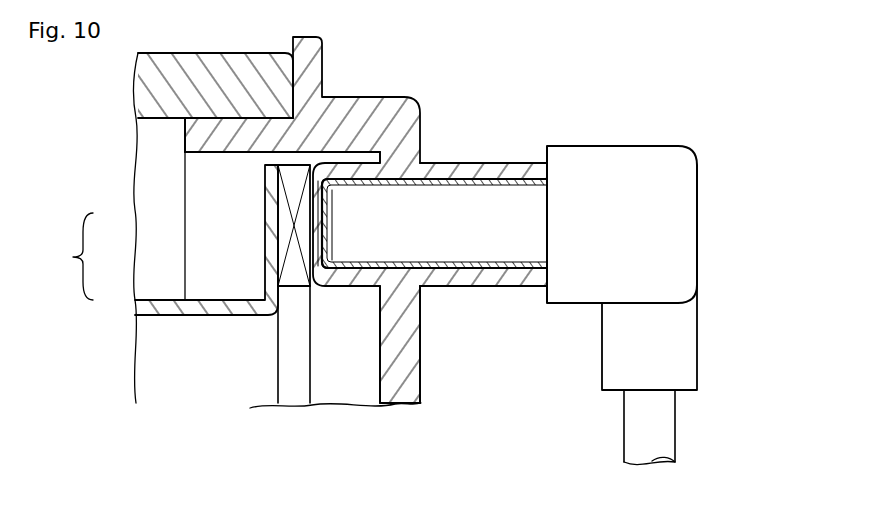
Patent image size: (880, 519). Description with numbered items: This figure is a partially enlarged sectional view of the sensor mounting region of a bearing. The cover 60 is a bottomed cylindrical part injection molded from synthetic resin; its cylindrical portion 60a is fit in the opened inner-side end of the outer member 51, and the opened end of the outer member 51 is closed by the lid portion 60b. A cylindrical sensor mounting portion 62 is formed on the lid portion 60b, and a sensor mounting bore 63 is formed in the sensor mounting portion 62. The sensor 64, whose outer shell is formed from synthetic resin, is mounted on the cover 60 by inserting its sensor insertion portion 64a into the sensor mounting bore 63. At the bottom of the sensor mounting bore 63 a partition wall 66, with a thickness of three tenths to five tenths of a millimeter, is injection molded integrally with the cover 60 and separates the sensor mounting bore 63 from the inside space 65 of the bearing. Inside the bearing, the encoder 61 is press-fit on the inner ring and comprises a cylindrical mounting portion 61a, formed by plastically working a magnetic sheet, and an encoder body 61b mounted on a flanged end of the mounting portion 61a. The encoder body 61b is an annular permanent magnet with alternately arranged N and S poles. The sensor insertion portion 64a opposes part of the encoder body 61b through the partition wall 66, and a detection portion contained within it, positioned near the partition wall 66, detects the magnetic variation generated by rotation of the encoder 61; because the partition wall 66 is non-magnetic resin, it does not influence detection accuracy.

The outer member 51 is at (183, 77).
The cover 60 is at (403, 97).
The cylindrical portion 60a is at (233, 125).
The lid portion 60b is at (421, 348).
The encoder 61 is at (176, 277).
The mounting portion 61a is at (182, 310).
The encoder body 61b is at (288, 210).
The sensor mounting portion 62 is at (500, 163).
The sensor mounting bore 63 is at (470, 184).
The sensor 64 is at (663, 147).
The sensor insertion portion 64a is at (490, 230).
The inside space 65 is at (352, 158).
The partition wall 66 is at (316, 238).